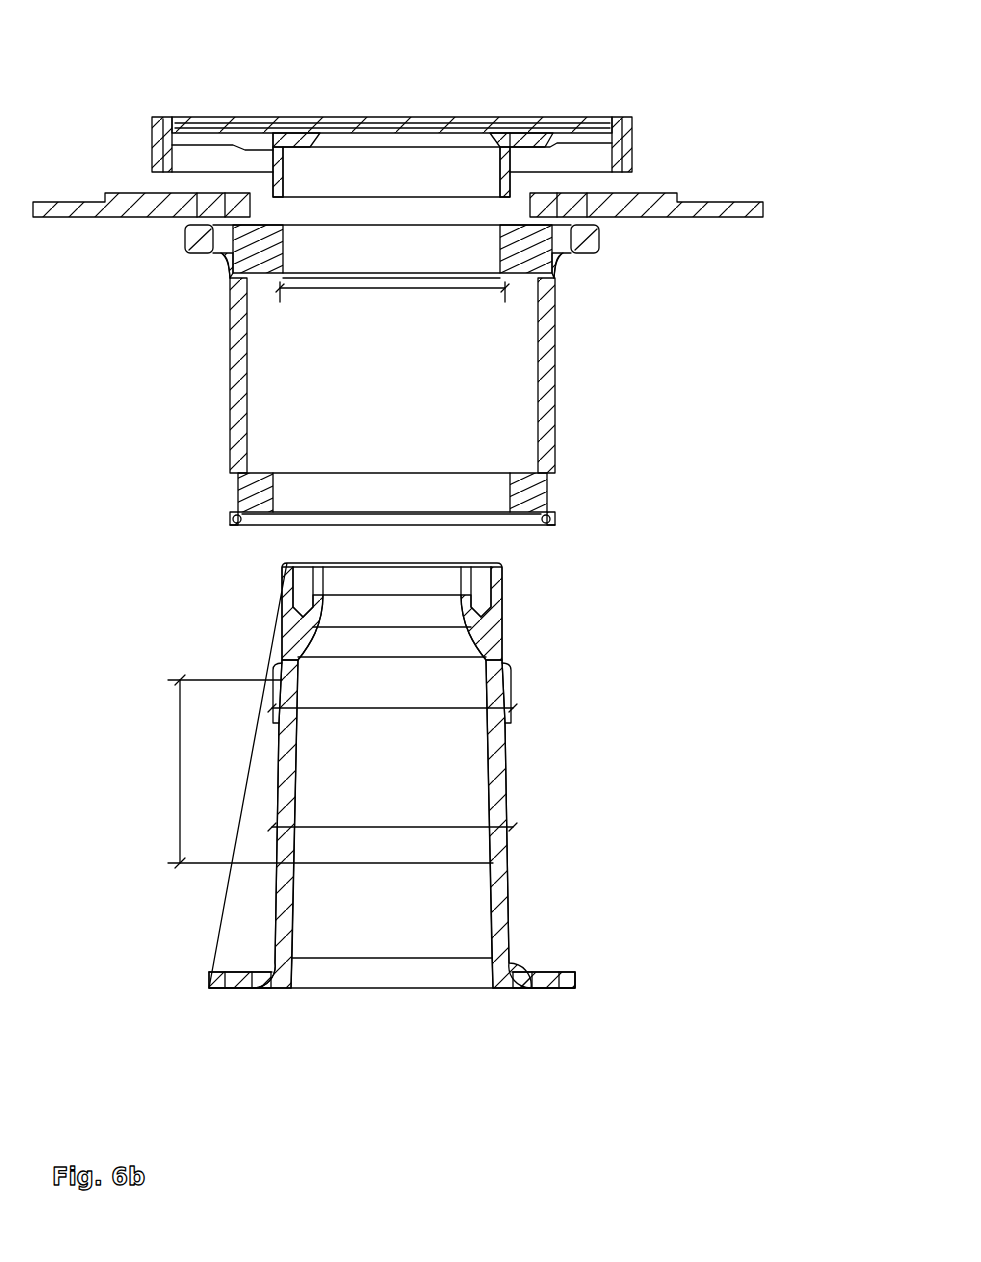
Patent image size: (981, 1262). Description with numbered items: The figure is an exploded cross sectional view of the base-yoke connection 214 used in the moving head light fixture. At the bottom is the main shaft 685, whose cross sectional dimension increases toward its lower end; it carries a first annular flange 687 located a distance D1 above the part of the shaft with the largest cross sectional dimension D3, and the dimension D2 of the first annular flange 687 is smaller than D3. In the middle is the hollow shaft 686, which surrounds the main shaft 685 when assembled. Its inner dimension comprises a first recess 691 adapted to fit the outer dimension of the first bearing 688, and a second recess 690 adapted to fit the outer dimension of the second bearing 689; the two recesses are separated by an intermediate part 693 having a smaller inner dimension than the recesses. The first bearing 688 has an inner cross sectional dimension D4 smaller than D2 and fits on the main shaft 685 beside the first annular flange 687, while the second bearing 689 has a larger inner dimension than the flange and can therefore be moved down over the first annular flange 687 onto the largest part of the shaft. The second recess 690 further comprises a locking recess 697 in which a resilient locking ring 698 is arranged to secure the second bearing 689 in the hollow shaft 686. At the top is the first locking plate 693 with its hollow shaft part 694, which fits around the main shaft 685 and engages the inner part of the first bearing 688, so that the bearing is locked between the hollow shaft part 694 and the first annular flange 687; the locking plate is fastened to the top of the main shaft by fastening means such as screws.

The base-yoke connection 214 is at (158, 62).
The hollow shaft part 694 is at (468, 130).
The first locking plate 693 is at (583, 117).
The hollow shaft 686 is at (165, 294).
The first recess 691 is at (520, 248).
The first bearing 688 is at (522, 250).
The second recess 690 is at (543, 483).
The second bearing 689 is at (527, 493).
The locking recess 697 is at (552, 522).
The resilient locking ring 698 is at (548, 522).
The first annular flange 687 is at (500, 668).
The main shaft 685 is at (565, 742).